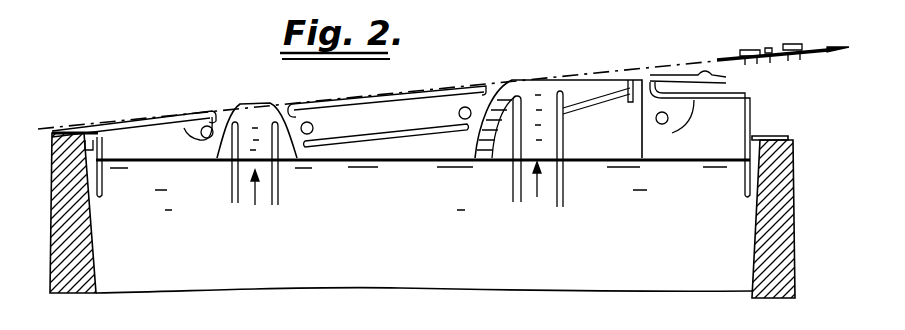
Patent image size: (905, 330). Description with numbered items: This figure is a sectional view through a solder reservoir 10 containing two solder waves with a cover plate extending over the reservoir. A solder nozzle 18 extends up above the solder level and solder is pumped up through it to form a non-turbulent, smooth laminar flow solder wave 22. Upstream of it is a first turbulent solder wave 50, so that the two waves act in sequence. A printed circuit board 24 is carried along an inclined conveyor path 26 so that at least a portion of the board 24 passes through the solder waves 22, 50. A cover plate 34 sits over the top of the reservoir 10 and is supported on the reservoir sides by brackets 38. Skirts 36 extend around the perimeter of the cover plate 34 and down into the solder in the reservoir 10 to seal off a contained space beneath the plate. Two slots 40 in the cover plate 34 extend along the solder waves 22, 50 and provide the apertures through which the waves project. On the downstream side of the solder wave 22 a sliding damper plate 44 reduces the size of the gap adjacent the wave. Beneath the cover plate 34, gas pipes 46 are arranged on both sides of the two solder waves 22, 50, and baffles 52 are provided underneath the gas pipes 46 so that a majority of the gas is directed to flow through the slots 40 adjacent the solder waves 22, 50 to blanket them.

The solder reservoir 10 is at (788, 216).
The solder nozzle 18 is at (565, 185).
The solder wave 22 is at (538, 76).
The printed circuit board 24 is at (786, 45).
The conveyor path 26 is at (688, 62).
The cover plate 34 is at (158, 118).
The skirts 36 is at (103, 192).
The brackets 38 is at (69, 132).
The longitudinal slot 40 is at (289, 100).
The sliding damper plate 44 is at (726, 80).
The gas pipes 46 is at (200, 146).
The turbulent solder wave 50 is at (250, 100).
The baffles 52 is at (186, 132).